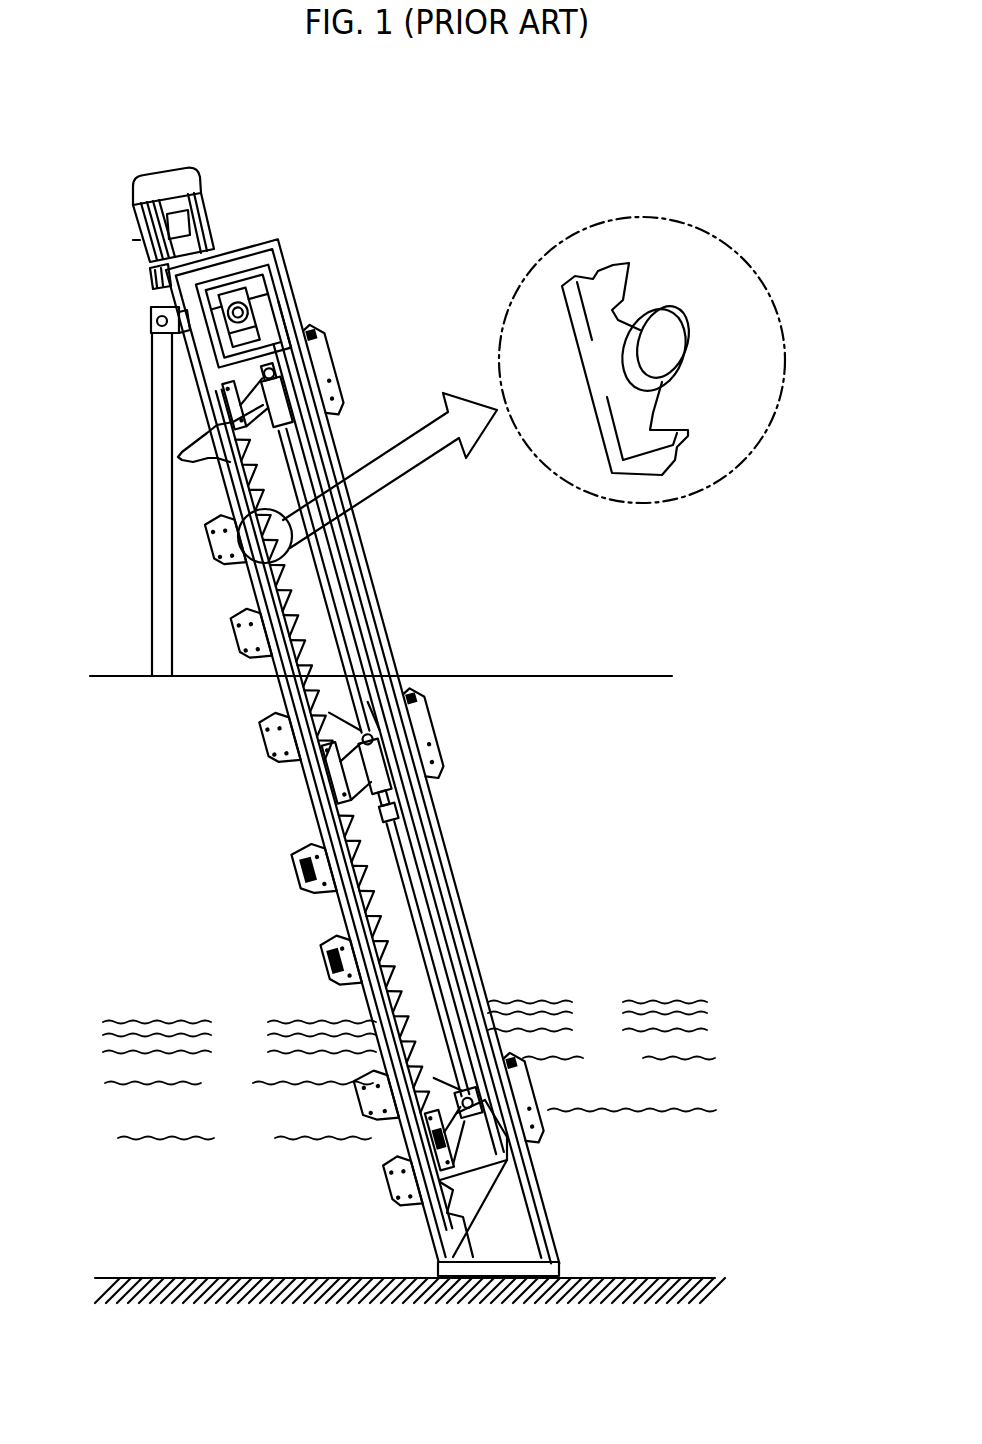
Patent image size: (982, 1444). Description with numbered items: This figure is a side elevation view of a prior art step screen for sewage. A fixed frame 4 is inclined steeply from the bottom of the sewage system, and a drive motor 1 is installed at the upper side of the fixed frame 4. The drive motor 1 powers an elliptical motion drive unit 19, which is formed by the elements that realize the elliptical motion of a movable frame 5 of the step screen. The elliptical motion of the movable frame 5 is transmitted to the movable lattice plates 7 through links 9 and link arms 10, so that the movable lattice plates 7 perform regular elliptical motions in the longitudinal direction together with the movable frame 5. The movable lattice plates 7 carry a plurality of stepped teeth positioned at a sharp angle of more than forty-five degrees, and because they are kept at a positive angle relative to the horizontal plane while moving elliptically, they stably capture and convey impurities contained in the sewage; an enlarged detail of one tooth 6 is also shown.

The drive motor 1 is at (190, 177).
The elliptical motion drive unit 19 is at (257, 263).
The links 9 is at (276, 375).
The link arms 10 is at (325, 580).
The movable frame 5 is at (487, 1165).
The fixed frame 4 is at (517, 1212).
The rake tooth 6 is at (605, 401).
The movable lattice plates 7 is at (670, 416).